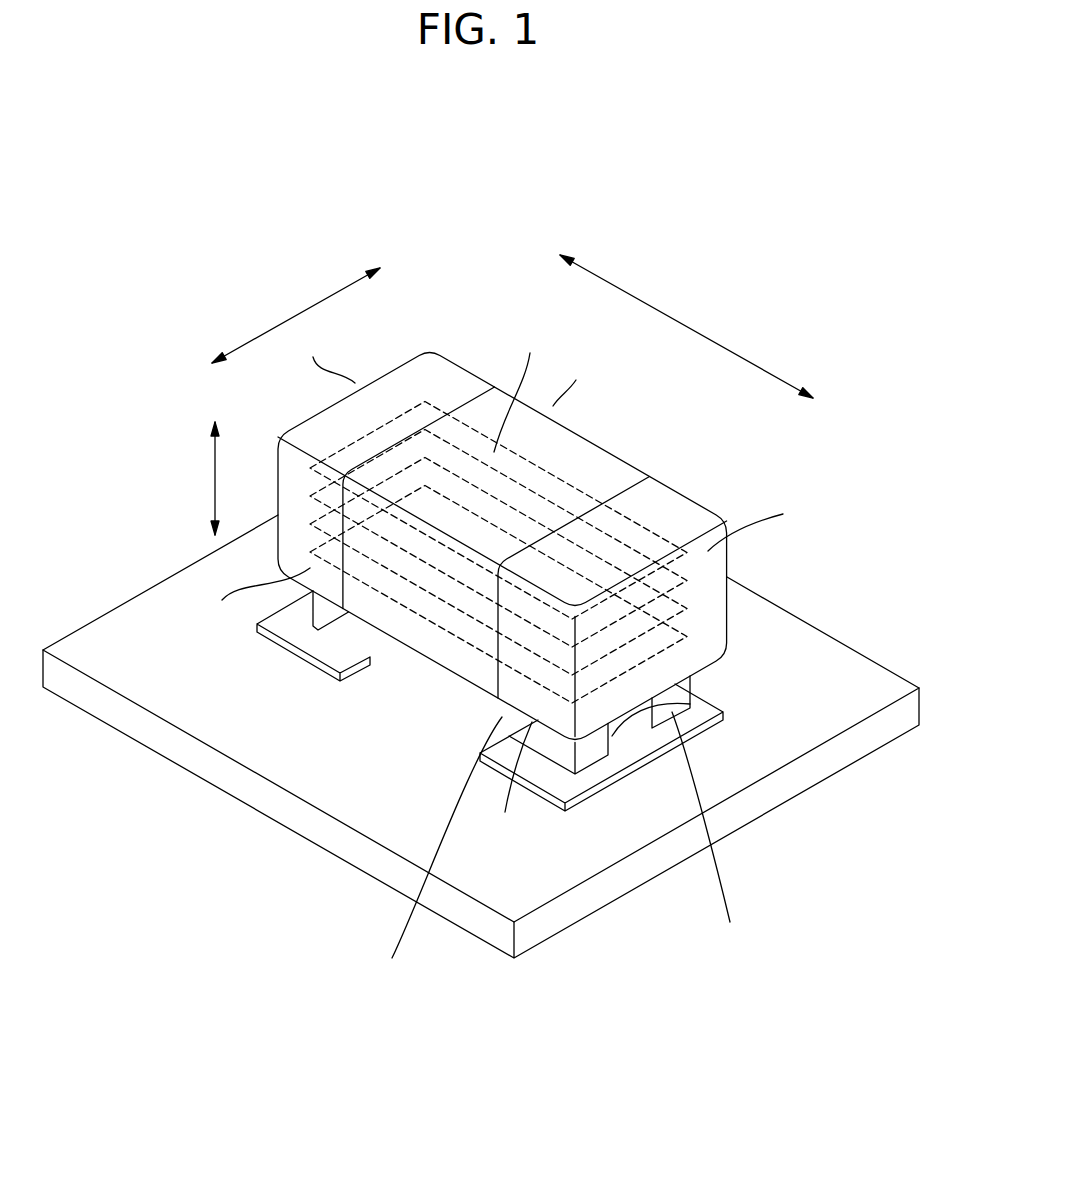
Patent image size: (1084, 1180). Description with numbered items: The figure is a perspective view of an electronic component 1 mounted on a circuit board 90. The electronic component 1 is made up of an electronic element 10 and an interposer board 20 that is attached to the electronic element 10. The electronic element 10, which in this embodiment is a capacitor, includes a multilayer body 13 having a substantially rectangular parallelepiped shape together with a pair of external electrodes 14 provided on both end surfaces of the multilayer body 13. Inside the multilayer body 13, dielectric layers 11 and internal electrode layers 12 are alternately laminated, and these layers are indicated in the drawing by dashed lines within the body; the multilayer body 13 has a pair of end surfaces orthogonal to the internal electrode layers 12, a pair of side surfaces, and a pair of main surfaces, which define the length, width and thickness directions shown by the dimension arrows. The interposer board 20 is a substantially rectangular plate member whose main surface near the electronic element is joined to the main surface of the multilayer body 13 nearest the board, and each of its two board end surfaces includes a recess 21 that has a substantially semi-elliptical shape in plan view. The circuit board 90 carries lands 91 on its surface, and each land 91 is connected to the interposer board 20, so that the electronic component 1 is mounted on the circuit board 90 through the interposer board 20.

The electronic component 1 is at (588, 149).
The electronic element 10 is at (606, 470).
The dielectric layers 11 is at (440, 607).
The internal electrode layers 12 is at (457, 638).
The multilayer body 13 is at (498, 608).
The external electrodes 14 is at (447, 375).
The interposer board 20 is at (700, 688).
The recess 21 is at (633, 722).
The circuit board 90 is at (919, 705).
The lands 91 is at (292, 653).